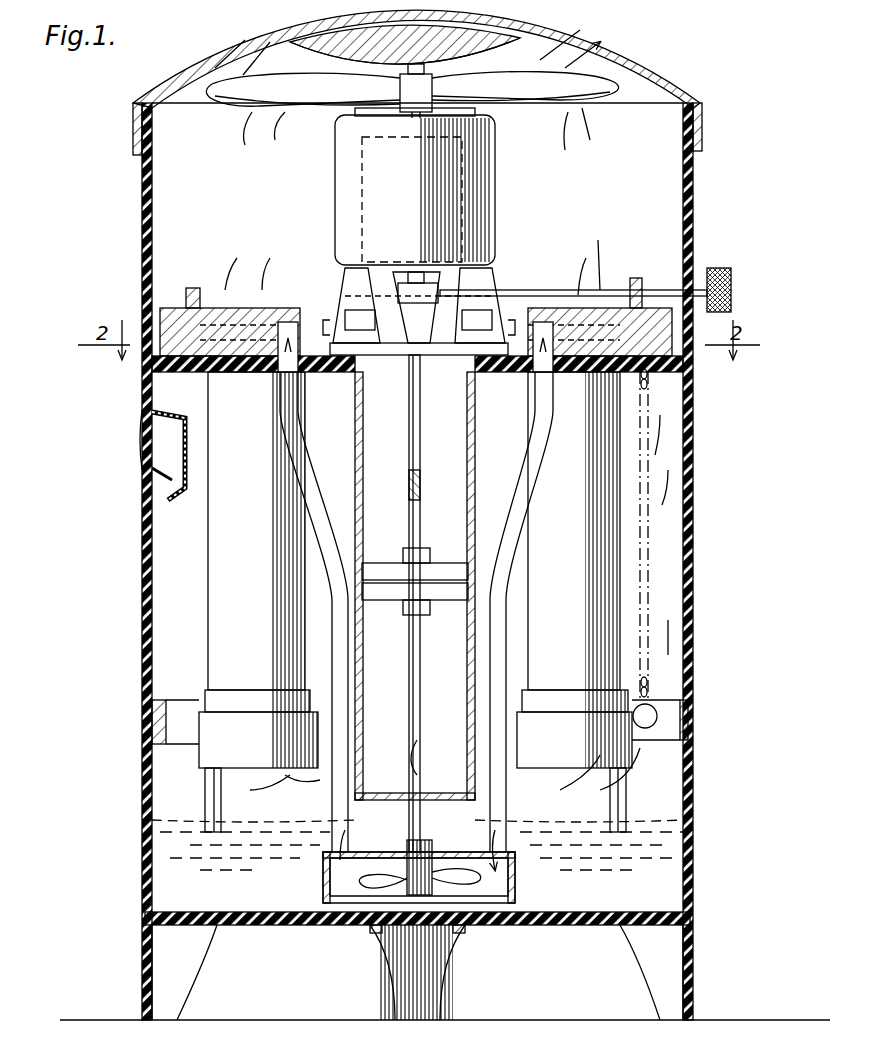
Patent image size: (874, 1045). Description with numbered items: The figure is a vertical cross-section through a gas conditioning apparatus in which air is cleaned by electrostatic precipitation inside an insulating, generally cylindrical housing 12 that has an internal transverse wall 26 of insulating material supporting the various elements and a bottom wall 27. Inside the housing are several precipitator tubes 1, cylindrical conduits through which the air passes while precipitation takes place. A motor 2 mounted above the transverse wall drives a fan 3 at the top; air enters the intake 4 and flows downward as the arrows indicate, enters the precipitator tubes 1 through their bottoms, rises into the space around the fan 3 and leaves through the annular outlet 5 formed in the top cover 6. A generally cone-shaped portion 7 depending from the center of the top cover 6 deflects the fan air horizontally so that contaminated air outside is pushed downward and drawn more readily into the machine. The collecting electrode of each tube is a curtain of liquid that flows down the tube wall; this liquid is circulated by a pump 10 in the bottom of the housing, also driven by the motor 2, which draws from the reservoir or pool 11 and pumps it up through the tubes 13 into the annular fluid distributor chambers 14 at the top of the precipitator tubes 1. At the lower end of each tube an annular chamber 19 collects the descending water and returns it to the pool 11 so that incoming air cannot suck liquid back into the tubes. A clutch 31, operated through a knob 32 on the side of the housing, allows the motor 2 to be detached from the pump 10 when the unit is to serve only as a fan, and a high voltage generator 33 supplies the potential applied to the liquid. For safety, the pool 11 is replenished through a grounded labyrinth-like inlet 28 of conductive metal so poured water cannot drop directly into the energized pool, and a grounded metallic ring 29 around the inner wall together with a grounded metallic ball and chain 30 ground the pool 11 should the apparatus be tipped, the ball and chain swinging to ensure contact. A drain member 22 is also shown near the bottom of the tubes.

The precipitator tubes 1 is at (215, 572).
The motor 2 is at (480, 184).
The fan 3 is at (538, 92).
The intake 4 is at (694, 450).
The annular outlet 5 is at (540, 40).
The top cover 6 is at (492, 27).
The cone-shaped portion 7 is at (400, 70).
The pump 10 is at (432, 882).
The reservoir or pool 11 is at (672, 836).
The housing 12 is at (694, 878).
The tubes 13 is at (308, 495).
The annular fluid distributor chambers 14 is at (212, 330).
The annular chamber 19 is at (210, 753).
The drain tube 22 is at (207, 790).
The internal transverse wall 26 is at (322, 372).
The bottom wall 27 is at (556, 927).
The labyrinth-like inlet 28 is at (172, 415).
The metallic ring 29 is at (690, 722).
The metallic ball and chain 30 is at (652, 710).
The clutch 31 is at (438, 290).
The knob 32 is at (731, 282).
The high voltage generator 33 is at (360, 272).